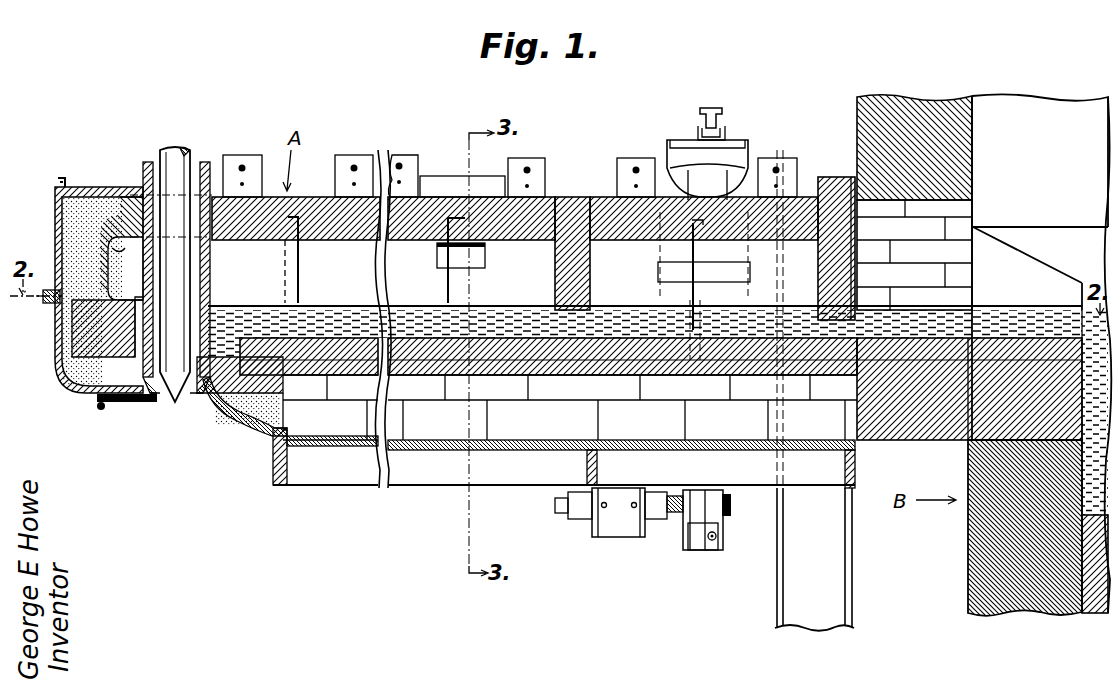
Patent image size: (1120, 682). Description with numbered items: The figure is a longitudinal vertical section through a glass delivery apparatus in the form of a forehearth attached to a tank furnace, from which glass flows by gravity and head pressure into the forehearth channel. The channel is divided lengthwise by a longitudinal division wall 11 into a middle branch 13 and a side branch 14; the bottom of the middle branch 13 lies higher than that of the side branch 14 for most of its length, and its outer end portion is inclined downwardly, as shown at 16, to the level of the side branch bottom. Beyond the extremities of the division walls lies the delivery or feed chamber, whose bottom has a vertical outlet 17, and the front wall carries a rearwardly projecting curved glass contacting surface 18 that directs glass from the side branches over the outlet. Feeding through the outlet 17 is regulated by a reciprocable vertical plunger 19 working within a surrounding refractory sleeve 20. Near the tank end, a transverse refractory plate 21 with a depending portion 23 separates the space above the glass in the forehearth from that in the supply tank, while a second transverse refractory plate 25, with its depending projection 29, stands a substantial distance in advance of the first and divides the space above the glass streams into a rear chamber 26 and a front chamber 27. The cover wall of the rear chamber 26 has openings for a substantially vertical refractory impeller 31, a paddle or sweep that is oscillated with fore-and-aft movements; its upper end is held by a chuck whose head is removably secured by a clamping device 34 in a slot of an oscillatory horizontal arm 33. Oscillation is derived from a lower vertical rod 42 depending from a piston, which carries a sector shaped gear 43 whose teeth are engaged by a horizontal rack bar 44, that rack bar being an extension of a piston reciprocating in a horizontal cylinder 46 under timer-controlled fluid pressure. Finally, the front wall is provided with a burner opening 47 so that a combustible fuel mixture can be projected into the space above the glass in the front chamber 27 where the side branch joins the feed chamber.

The longitudinal division wall 11 is at (500, 305).
The middle branch 13 is at (425, 345).
The side branch 14 is at (540, 365).
The inclined bottom portion 16 is at (245, 382).
The vertical outlet 17 is at (150, 395).
The curved glass contacting surface 18 is at (56, 322).
The reciprocable vertical plunger 19 is at (178, 160).
The refractory sleeve 20 is at (212, 290).
The transverse refractory plate 21 is at (835, 185).
The depending portion 23 is at (822, 315).
The transverse refractory plate 25 is at (580, 265).
The rear transverse chamber 26 is at (681, 272).
The front chamber 27 is at (442, 260).
The depending projection 29 is at (588, 302).
The refractory impeller 31 is at (705, 295).
The oscillatory horizontal arm 33 is at (740, 152).
The clamping device 34 is at (720, 135).
The lower vertical rod 42 is at (705, 496).
The sector shaped gear 43 is at (685, 548).
The horizontal rack bar 44 is at (728, 512).
The horizontal cylinder 46 is at (620, 530).
The burner opening 47 is at (122, 243).